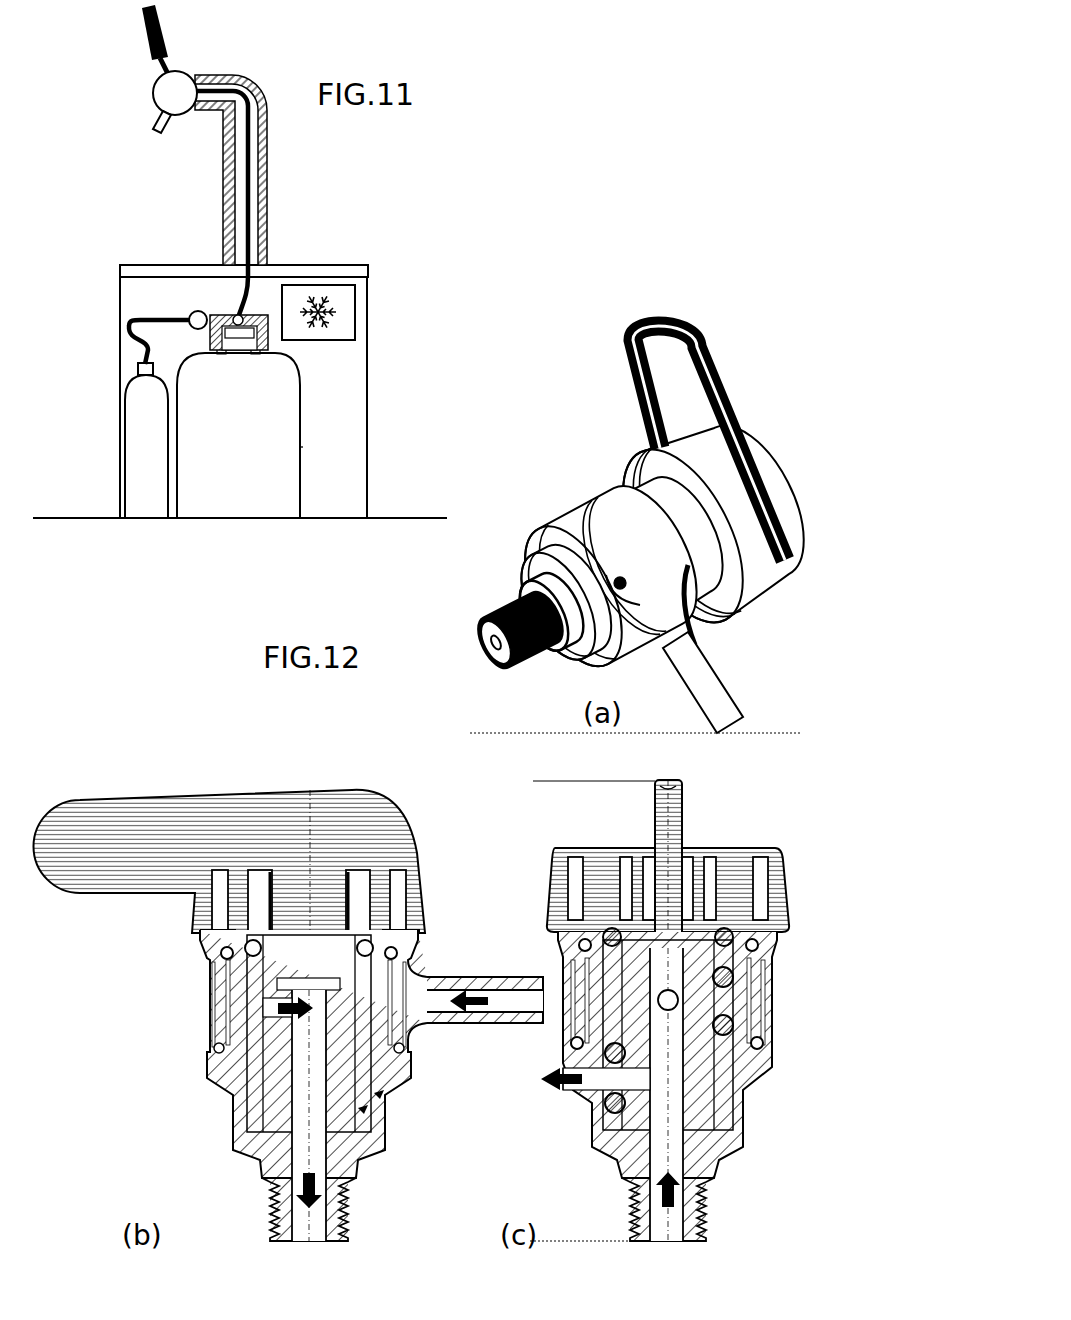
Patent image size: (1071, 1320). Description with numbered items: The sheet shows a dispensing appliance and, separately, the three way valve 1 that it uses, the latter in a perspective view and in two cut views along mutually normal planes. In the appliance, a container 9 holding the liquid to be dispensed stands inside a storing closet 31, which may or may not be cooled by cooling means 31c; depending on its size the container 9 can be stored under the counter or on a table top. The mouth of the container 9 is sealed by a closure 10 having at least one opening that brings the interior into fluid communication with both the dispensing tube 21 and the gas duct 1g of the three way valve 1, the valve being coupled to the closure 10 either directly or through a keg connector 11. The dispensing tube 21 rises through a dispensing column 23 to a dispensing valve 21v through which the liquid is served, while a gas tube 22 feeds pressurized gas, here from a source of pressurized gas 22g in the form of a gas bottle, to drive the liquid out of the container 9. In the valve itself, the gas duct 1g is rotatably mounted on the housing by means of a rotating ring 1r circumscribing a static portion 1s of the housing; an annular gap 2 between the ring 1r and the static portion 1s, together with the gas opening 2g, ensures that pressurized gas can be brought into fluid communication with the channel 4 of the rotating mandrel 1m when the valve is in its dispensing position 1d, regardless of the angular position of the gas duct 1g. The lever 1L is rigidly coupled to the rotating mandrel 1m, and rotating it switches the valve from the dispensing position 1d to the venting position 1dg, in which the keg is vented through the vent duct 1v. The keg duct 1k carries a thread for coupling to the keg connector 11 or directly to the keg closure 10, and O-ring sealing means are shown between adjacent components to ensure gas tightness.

In FIG. 11, the three way valve 1 is at (190, 316).
In FIG. 11, the container 9 is at (300, 465).
In FIG. 11, the container closure 10 is at (237, 337).
In FIG. 11, the keg connector 11 is at (236, 317).
In FIG. 11, the dispensing tube 21 is at (246, 162).
In FIG. 11, the dispensing valve 21v is at (153, 92).
In FIG. 11, the gas tube 22 is at (125, 325).
In FIG. 11, the source of pressurized gas 22g is at (123, 432).
In FIG. 11, the dispensing column 23 is at (268, 176).
In FIG. 11, the storing closet 31 is at (368, 422).
In FIG. 11, the cooling means 31c is at (352, 310).
In FIG. 12, the lever 1L is at (713, 378).
In FIG. 12, the keg duct 1k is at (487, 615).
In FIG. 12, the gas duct 1g is at (722, 678).
In FIG. 12, the dispensing position of three way valve 1d is at (445, 865).
In FIG. 12, the venting position of three way valve 1dg is at (606, 826).
In FIG. 12, the annular gap 2 is at (403, 963).
In FIG. 12, the gas opening 2g is at (692, 1007).
In FIG. 12, the channel 4 is at (313, 1068).
In FIG. 12, the rotating ring 1r is at (215, 985).
In FIG. 12, the static portion 1s is at (205, 1080).
In FIG. 12, the rotating mandrel 1m is at (383, 1097).
In FIG. 12, the vent duct 1v is at (565, 1090).